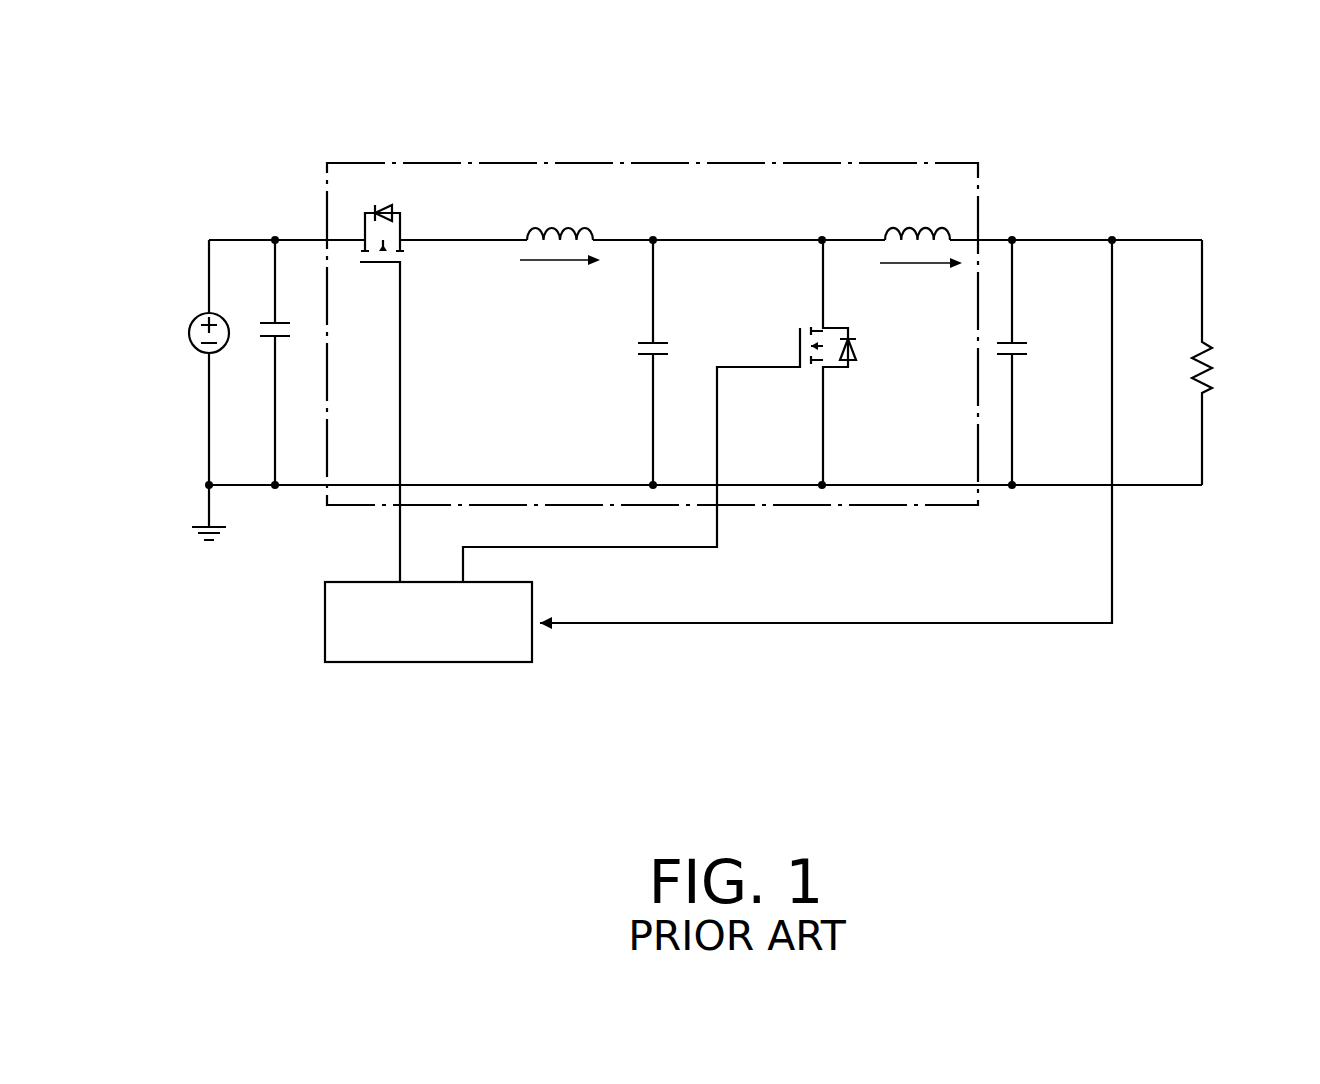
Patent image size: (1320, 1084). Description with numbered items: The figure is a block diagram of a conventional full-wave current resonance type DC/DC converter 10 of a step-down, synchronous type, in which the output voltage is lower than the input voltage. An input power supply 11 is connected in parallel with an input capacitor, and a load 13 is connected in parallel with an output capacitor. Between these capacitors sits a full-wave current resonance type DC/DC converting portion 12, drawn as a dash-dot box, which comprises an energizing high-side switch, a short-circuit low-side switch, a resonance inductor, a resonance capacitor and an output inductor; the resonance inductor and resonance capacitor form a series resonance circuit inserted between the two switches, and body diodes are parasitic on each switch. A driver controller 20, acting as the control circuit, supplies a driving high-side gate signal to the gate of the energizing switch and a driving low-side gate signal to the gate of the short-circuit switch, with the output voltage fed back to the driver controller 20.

The current resonance type DC/DC converter 10 is at (984, 142).
The input power supply 11 is at (189, 333).
The full-wave current resonance type DC/DC converting portion 12 is at (737, 163).
The load 13 is at (1213, 367).
The driver controller 20 is at (325, 619).